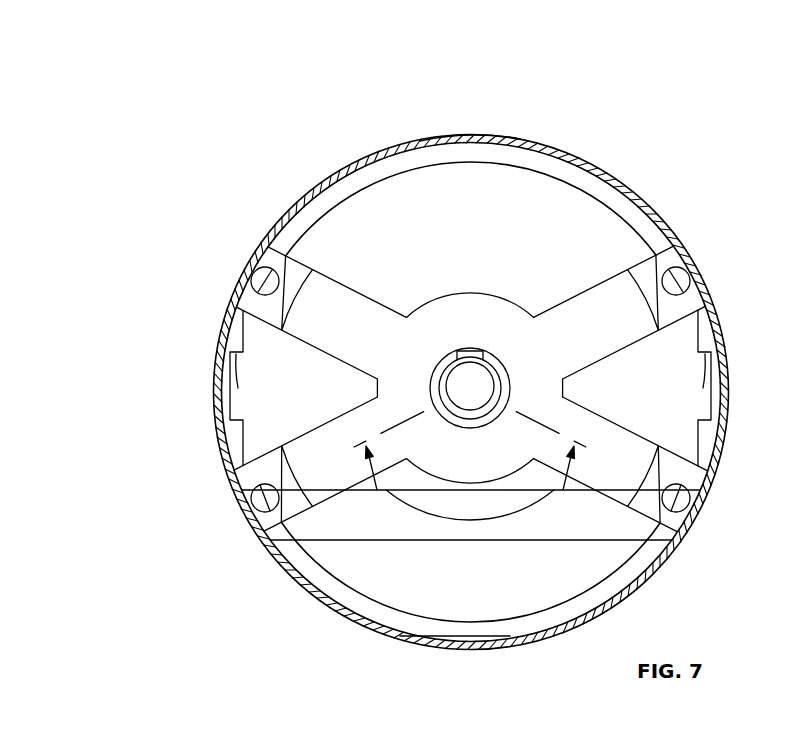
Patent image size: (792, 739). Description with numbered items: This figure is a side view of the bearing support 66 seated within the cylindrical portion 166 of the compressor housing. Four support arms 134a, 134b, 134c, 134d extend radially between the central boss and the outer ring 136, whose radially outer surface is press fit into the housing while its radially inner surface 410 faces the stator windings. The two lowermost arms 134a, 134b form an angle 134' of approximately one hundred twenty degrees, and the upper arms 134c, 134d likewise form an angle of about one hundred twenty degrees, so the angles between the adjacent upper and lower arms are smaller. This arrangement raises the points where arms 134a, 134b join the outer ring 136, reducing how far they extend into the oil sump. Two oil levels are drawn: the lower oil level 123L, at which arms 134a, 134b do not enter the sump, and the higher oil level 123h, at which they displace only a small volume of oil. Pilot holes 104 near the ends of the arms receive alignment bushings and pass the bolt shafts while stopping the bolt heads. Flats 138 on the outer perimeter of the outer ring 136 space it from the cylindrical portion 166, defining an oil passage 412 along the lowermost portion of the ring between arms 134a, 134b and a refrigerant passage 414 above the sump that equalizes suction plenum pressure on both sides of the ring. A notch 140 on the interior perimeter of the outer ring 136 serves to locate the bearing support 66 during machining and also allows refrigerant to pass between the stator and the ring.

The bearing support 66 is at (170, 425).
The pilot holes 104 is at (258, 273).
The oil level 123h is at (320, 507).
The oil level 123L is at (530, 540).
The support arm 134a is at (315, 438).
The support arm 134b is at (600, 433).
The support arm 134c is at (337, 293).
The support arm 134d is at (602, 293).
The angle 134' is at (470, 537).
The outer ring 136 is at (310, 575).
The flats 138 is at (435, 140).
The notch 140 is at (225, 342).
The cylindrical portion 166 is at (512, 137).
The radially inner surface 410 is at (378, 182).
The oil passage 412 is at (477, 638).
The refrigerant passage 414 is at (463, 143).